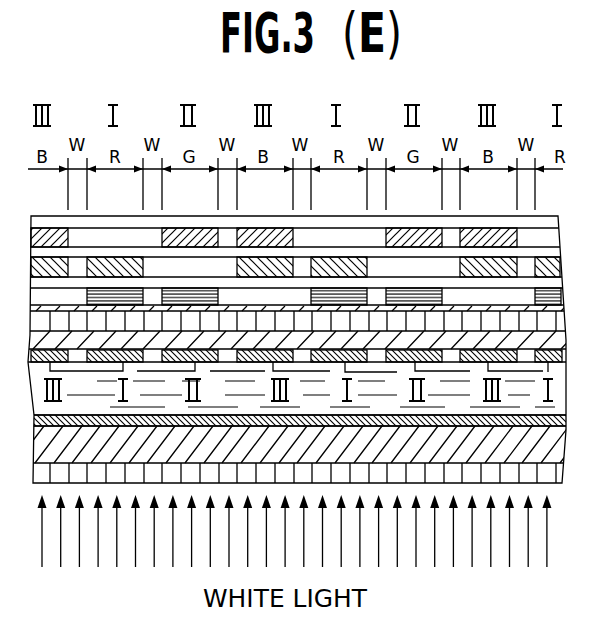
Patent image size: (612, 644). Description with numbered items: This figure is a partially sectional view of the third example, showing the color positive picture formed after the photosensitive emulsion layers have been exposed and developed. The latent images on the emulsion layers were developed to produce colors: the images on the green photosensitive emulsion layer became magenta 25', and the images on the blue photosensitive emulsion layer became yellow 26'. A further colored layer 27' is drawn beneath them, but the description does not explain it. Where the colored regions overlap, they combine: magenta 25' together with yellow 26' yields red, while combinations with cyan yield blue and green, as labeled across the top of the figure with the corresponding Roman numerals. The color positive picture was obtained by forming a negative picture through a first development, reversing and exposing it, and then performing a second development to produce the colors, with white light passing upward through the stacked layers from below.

The magenta 25' is at (274, 217).
The yellow 26' is at (295, 232).
The third color filter layer 27' is at (324, 246).